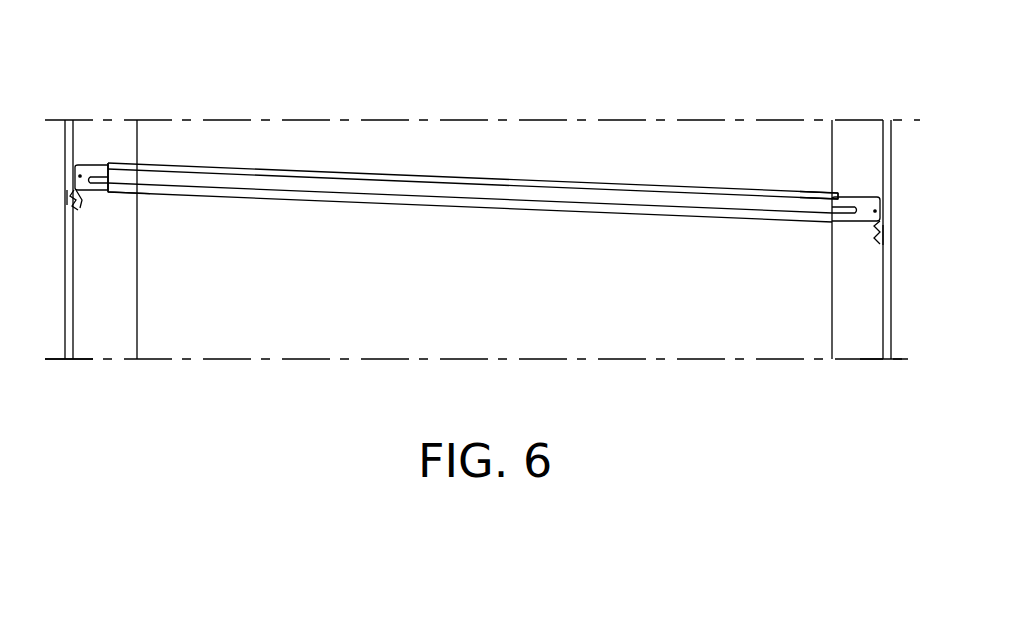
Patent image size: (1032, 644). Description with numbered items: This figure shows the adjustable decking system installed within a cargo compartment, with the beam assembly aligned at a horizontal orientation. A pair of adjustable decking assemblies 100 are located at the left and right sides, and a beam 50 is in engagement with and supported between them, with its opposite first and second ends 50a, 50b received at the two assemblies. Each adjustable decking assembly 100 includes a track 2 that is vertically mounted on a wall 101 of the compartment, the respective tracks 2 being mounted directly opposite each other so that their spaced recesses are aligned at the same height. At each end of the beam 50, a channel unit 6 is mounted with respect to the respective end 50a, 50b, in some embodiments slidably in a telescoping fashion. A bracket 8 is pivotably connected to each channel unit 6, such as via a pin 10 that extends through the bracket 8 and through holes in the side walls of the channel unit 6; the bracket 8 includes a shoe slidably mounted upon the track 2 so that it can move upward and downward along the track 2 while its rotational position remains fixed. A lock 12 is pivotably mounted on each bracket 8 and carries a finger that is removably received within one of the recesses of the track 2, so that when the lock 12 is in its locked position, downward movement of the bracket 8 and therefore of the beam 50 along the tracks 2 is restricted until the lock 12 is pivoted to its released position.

The track 2 is at (67, 141).
The channel unit 6 is at (93, 188).
The bracket 8 is at (67, 190).
The pin 10 is at (474, 179).
The lock 12 is at (82, 200).
The beam 50 is at (384, 204).
The first end 50a is at (822, 190).
The second end 50b is at (145, 189).
The adjustable decking assembly 100 is at (120, 146).
The wall 101 is at (58, 335).